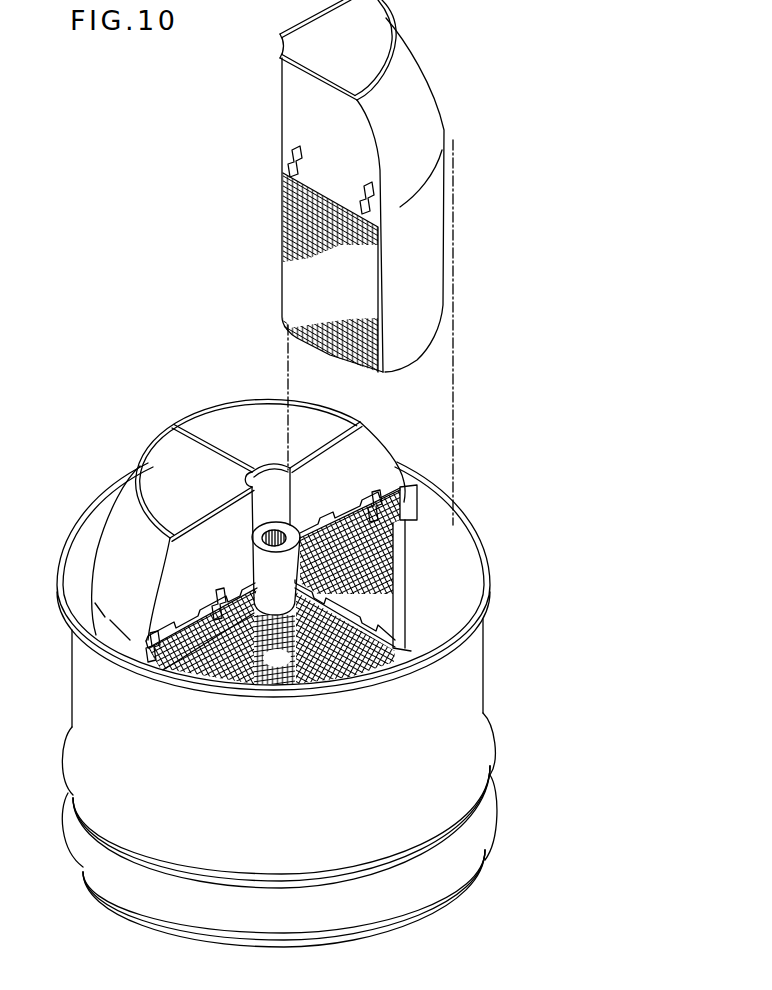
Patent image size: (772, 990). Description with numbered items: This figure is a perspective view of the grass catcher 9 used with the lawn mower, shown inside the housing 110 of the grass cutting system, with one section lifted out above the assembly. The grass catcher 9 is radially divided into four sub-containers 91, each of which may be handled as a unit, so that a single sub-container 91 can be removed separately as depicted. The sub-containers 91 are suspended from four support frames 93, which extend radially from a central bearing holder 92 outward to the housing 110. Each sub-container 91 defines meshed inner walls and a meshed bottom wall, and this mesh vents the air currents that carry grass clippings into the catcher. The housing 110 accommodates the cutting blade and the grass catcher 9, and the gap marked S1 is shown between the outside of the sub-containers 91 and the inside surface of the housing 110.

The grass catcher 9 is at (207, 404).
The sub-container 91 is at (280, 101).
The bearing holder 92 is at (297, 534).
The support frame 93 is at (407, 506).
The housing 110 is at (81, 671).
The space S1 is at (83, 556).